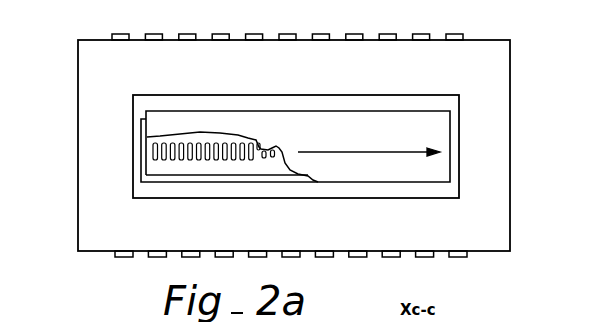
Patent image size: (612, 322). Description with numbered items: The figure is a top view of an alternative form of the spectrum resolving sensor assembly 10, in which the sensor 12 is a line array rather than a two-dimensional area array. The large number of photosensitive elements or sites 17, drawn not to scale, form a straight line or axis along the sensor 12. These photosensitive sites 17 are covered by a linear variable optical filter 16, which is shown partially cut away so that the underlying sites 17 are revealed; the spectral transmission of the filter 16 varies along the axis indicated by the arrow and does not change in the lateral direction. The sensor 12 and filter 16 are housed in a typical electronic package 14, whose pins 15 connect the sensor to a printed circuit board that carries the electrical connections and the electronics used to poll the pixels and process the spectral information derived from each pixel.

The spectrum resolving sensor assembly 10 is at (194, 77).
The monolithic array sensor 12 is at (182, 180).
The electronic package 14 is at (79, 153).
The pins 15 is at (123, 257).
The linear variable filter 16 is at (440, 123).
The photosensitive elements 17 is at (155, 158).